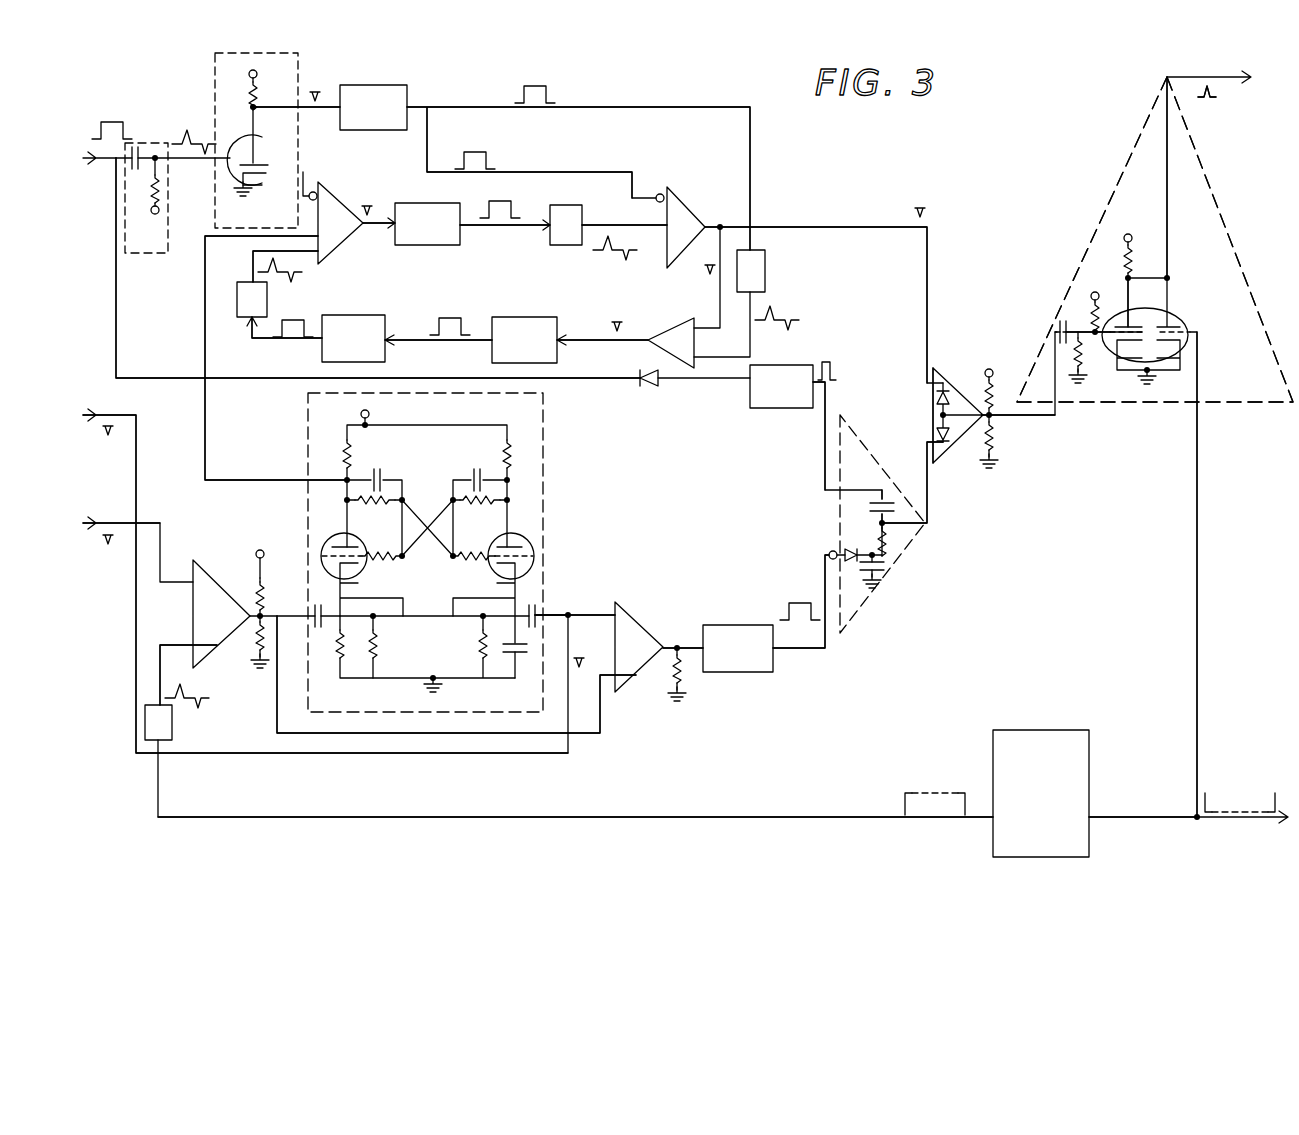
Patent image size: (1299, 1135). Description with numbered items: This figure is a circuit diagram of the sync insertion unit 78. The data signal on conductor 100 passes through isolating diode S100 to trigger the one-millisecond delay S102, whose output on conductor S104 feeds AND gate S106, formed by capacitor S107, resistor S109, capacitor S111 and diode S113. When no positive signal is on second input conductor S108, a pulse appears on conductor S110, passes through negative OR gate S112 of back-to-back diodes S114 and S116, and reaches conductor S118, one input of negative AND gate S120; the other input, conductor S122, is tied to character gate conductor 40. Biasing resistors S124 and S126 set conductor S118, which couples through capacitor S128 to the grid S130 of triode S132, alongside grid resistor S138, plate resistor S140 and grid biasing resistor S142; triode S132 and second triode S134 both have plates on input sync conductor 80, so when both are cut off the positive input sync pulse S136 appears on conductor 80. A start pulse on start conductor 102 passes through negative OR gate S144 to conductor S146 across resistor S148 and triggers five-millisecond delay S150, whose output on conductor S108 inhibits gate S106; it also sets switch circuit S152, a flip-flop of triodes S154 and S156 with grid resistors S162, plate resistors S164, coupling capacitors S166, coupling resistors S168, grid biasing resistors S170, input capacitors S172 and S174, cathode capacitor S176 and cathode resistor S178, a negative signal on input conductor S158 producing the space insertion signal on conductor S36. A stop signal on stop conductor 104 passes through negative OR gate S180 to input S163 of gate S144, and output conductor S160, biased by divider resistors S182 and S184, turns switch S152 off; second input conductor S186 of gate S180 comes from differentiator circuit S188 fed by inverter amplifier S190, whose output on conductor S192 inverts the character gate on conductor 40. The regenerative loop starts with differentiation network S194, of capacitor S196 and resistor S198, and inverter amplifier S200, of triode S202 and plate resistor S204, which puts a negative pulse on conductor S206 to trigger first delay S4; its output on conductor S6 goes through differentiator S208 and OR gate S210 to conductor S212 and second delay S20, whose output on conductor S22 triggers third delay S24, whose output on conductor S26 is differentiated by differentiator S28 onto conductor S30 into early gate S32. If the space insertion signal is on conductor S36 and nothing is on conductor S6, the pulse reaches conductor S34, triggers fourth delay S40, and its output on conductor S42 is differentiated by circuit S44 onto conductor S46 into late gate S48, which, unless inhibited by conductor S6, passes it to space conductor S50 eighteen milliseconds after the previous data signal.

The sync insertion unit 78 is at (883, 160).
The input sync conductor 80 is at (1165, 77).
The character gate conductor 40 is at (1127, 815).
The data conductor 100 is at (105, 160).
The start conductor 102 is at (130, 418).
The stop conductor 104 is at (130, 526).
The first delay S4 is at (405, 88).
The output conductor of first delay S6 is at (468, 106).
The second delay S20 is at (548, 302).
The output conductor of second delay S22 is at (462, 348).
The third delay S24 is at (340, 315).
The output conductor of third delay S26 is at (302, 345).
The differentiator S28 is at (267, 296).
The input conductor of early gate S30 is at (269, 266).
The early gate S32 is at (352, 242).
The output conductor of early gate S34 is at (385, 243).
The sync insertion conductor S36 is at (270, 237).
The fourth delay S40 is at (460, 242).
The output conductor of fourth delay S42 is at (525, 235).
The differentiation circuit S44 is at (582, 210).
The input conductor of late gate S46 is at (645, 212).
The late gate S48 is at (707, 225).
The space conductor S50 is at (795, 226).
The isolating diode S100 is at (660, 386).
The one millisecond delay S102 is at (762, 408).
The output conductor of delay S102 S104 is at (830, 405).
The AND gate S106 is at (900, 440).
The capacitor S107 is at (868, 505).
The second input conductor of AND gate S106 S108 is at (828, 555).
The resistor S109 is at (893, 540).
The output conductor of AND gate S106 S110 is at (935, 523).
The capacitor S111 is at (895, 565).
The negative OR gate S112 is at (940, 465).
The germanium diode S113 is at (843, 550).
The germanium diode S114 is at (934, 398).
The germanium diode S116 is at (935, 436).
The conductor S118 is at (980, 420).
The negative AND gate S120 is at (1103, 215).
The conductor S122 is at (1197, 610).
The biasing resistor S124 is at (975, 385).
The biasing resistor S126 is at (995, 445).
The capacitor S128 is at (1055, 308).
The grid of triode S132 S130 is at (1140, 320).
The triode S132 is at (1117, 355).
The second triode S134 is at (1182, 322).
The input sync pulse S136 is at (1208, 98).
The grid resistor S138 is at (1072, 375).
The plate resistor S140 is at (1148, 258).
The grid biasing resistor S142 is at (1090, 300).
The negative OR gate S144 is at (628, 608).
The output conductor of OR gate S144 S146 is at (675, 640).
The resistor S148 is at (672, 680).
The delay S150 is at (735, 624).
The switch circuit S152 is at (548, 513).
The triode S154 is at (328, 540).
The triode S156 is at (528, 545).
The input conductor S158 is at (592, 612).
The input conductor S160 is at (300, 610).
The grid resistors S162 is at (478, 560).
The input of OR gate S144 S163 is at (600, 735).
The plate resistors S164 is at (505, 452).
The coupling capacitors S166 is at (475, 470).
The coupling resistors S168 is at (500, 503).
The grid biasing resistors S170 is at (380, 640).
The input capacitor S172 is at (322, 640).
The input capacitor S174 is at (530, 630).
The cathode capacitor S176 is at (488, 645).
The cathode resistor S178 is at (340, 645).
The negative OR gate S180 is at (198, 560).
The divider resistor S182 is at (255, 588).
The divider resistor S184 is at (250, 640).
The second input conductor of gate S180 S186 is at (160, 648).
The differentiator circuit S188 is at (172, 728).
The inverter amplifier S190 is at (1048, 730).
The conductor S192 is at (768, 815).
The differentiation network S194 is at (150, 258).
The capacitor S196 is at (137, 148).
The resistor S198 is at (160, 183).
The inverter amplifier S200 is at (215, 83).
The triode S202 is at (262, 158).
The plate resistor S204 is at (257, 100).
The conductor S206 is at (308, 110).
The differentiator S208 is at (766, 272).
The OR gate S210 is at (682, 322).
The conductor S212 is at (580, 338).